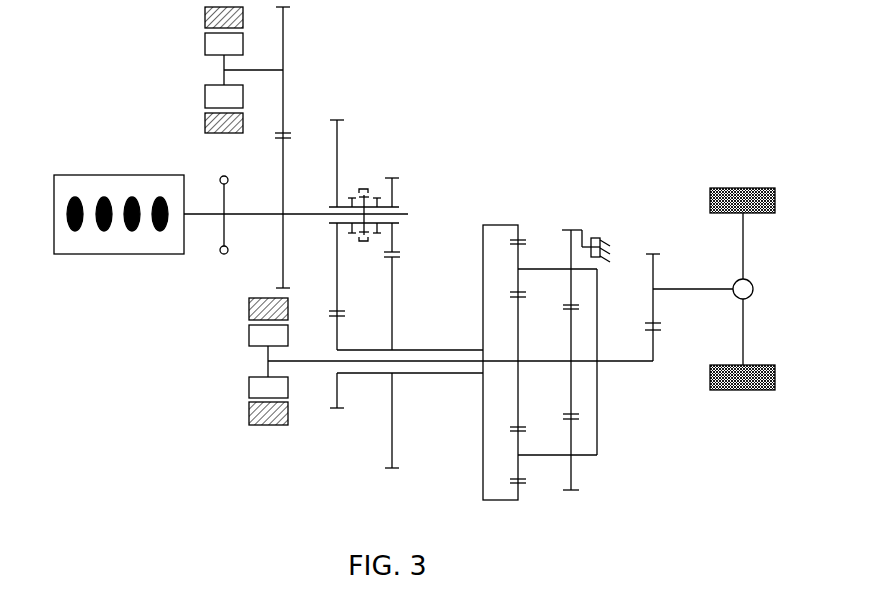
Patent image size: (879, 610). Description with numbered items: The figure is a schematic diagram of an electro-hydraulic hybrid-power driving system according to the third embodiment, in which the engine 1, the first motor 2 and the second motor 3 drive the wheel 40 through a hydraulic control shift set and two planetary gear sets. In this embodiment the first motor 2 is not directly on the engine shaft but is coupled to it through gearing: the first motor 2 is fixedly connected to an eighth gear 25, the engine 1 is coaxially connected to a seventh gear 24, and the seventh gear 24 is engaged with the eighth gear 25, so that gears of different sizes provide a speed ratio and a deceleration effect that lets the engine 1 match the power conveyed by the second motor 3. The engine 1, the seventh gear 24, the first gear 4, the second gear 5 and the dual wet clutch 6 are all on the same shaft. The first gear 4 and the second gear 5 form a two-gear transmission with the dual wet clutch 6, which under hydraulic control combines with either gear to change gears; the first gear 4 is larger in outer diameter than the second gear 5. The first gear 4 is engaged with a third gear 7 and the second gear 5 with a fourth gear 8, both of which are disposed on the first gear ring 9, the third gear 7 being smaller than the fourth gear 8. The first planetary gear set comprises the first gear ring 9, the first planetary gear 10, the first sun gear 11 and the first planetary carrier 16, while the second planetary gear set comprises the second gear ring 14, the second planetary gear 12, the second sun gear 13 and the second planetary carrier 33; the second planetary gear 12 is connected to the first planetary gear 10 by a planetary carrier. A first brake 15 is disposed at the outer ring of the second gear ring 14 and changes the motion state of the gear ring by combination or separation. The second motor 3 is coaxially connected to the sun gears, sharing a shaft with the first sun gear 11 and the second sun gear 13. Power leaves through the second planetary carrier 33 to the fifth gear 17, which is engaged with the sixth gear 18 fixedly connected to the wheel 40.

The engine 1 is at (55, 254).
The first motor 2 is at (205, 52).
The second motor 3 is at (249, 424).
The first gear 4 is at (338, 148).
The second gear 5 is at (393, 198).
The dual wet clutch 6 is at (367, 190).
The third gear 7 is at (338, 332).
The fourth gear 8 is at (393, 332).
The first gear ring 9 is at (489, 225).
The first planetary gear 10 is at (519, 258).
The first sun gear 11 is at (519, 353).
The second planetary gear 12 is at (570, 283).
The second sun gear 13 is at (570, 381).
The second gear ring 14 is at (579, 228).
The first brake 15 is at (601, 243).
The first planetary carrier 16 is at (537, 269).
The fifth gear 17 is at (654, 363).
The sixth gear 18 is at (654, 279).
The seventh gear 24 is at (283, 238).
The eighth gear 25 is at (284, 70).
The second planetary carrier 33 is at (598, 318).
The wheel 40 is at (773, 188).